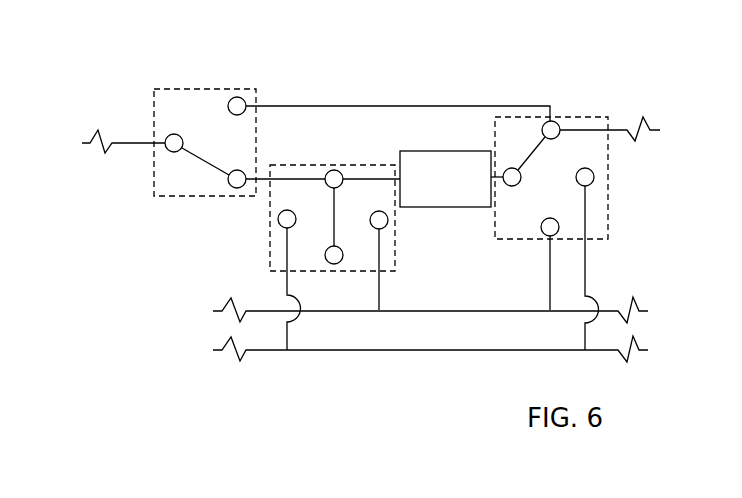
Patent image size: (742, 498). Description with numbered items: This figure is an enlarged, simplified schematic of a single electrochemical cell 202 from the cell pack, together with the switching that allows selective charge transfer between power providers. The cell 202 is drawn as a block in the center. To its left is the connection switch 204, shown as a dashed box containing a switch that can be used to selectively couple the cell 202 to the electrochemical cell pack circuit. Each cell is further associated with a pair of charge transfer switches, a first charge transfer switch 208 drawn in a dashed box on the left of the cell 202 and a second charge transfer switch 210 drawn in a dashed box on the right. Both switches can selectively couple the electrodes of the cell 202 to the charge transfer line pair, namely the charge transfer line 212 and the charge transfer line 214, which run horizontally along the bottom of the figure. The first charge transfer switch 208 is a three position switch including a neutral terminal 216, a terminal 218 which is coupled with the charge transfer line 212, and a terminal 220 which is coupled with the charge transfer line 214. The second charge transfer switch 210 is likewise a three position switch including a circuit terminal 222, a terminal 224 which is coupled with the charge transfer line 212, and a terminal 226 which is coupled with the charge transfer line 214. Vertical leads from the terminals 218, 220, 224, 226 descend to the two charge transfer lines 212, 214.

The connection switch 204 is at (180, 88).
The charge transfer switch 208 is at (293, 163).
The charge transfer switch 210 is at (590, 117).
The electrochemical cell 202 is at (457, 210).
The charge transfer line 212 is at (390, 350).
The charge transfer line 214 is at (500, 311).
The neutral terminal 216 is at (330, 262).
The terminal 218 is at (278, 220).
The terminal 220 is at (378, 212).
The circuit terminal 222 is at (545, 124).
The terminal 224 is at (595, 178).
The terminal 226 is at (552, 228).